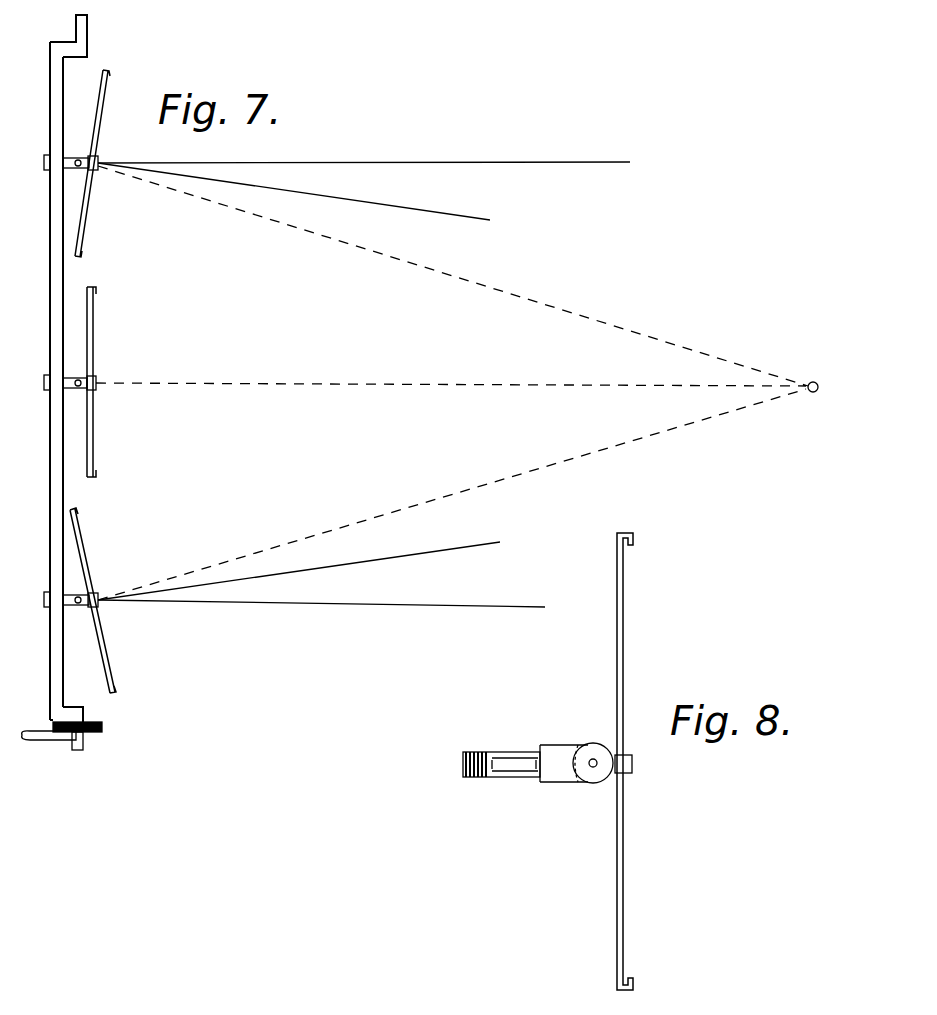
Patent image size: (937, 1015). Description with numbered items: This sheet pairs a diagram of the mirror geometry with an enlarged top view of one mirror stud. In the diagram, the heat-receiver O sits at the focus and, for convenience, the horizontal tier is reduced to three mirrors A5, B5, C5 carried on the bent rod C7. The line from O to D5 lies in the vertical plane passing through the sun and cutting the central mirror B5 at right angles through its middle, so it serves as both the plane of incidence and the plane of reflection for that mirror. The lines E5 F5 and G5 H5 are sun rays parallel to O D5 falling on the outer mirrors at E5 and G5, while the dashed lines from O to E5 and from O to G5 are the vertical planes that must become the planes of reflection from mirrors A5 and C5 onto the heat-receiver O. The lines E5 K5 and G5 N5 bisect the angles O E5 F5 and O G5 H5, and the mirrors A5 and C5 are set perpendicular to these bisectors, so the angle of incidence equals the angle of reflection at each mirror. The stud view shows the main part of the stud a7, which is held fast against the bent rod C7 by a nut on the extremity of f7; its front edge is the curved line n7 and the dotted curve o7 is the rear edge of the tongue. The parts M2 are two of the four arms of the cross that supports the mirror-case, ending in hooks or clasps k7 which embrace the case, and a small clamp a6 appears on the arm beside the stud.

In FIG. 7, the bent rod C7 is at (63, 86).
In FIG. 7, the point of incidence on mirror A5 E5 is at (91, 155).
In FIG. 7, the point of incidence on central mirror D5 is at (91, 375).
In FIG. 7, the point of incidence on mirror C5 G5 is at (88, 589).
In FIG. 7, the mirror A5 is at (89, 238).
In FIG. 7, the central mirror B5 is at (93, 437).
In FIG. 7, the mirror C5 is at (100, 660).
In FIG. 7, the sun ray endpoint F5 is at (374, 160).
In FIG. 7, the bisecting line endpoint K5 is at (303, 197).
In FIG. 7, the bisecting line endpoint N5 is at (309, 565).
In FIG. 7, the sun ray endpoint H5 is at (332, 605).
In FIG. 7, the heat-receiver O is at (812, 392).
In FIG. 8, the arms of the cross or holder M2 is at (623, 636).
In FIG. 8, the hooks or clasps k7 is at (647, 762).
In FIG. 8, the clamp a6 is at (602, 784).
In FIG. 8, the curved dotted line o7 is at (593, 763).
In FIG. 8, the curved line n7 is at (602, 746).
In FIG. 8, the main part of the stud a7 is at (564, 763).
In FIG. 8, the stud shank f7 is at (501, 774).